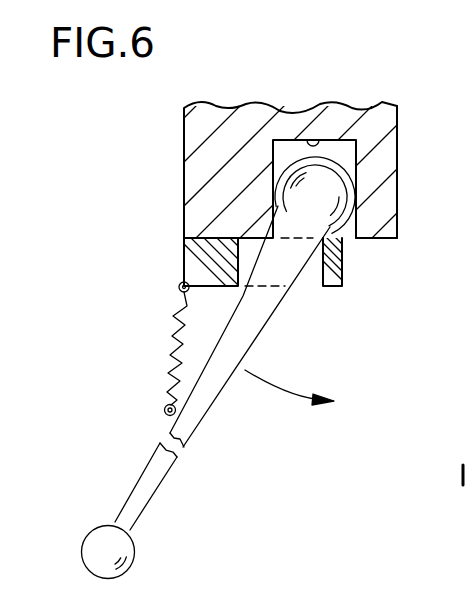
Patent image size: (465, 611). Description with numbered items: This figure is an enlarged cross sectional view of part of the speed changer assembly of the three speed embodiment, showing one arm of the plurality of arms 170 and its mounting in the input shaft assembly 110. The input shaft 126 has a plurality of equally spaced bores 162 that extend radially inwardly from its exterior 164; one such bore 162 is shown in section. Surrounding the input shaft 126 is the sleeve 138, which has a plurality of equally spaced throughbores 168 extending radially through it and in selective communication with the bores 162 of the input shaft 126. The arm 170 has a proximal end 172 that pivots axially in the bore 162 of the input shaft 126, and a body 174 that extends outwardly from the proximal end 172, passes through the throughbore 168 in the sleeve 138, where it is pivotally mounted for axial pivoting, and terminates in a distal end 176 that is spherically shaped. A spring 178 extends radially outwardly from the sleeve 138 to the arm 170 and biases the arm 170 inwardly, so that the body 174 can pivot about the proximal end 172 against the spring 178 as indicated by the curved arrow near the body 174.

The shifter assembly 110 is at (464, 148).
The input shaft 126 is at (192, 152).
The sleeve 138 is at (188, 258).
The bore 162 is at (320, 138).
The exterior 164 is at (375, 239).
The throughbore 168 is at (323, 272).
The arm 170 is at (226, 328).
The proximal end 172 is at (322, 198).
The body 174 is at (196, 417).
The distal end 176 is at (103, 532).
The spring 178 is at (173, 350).